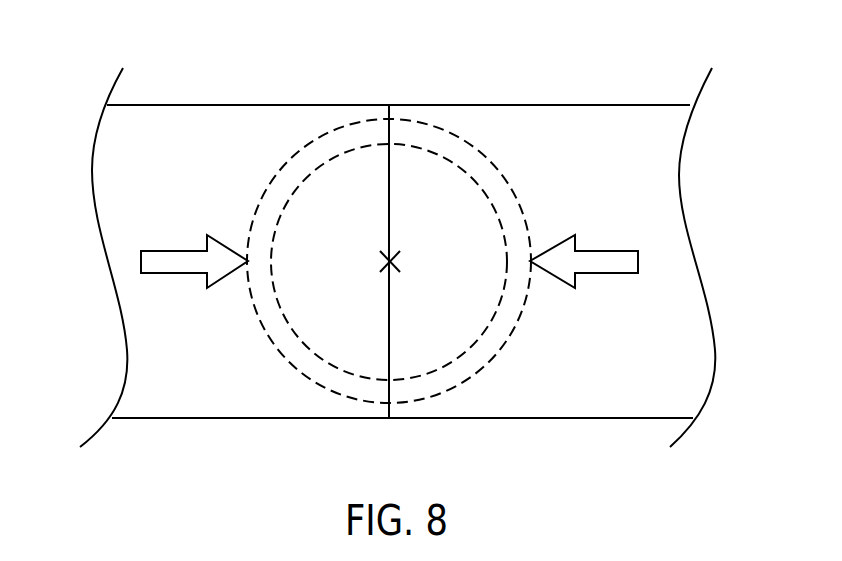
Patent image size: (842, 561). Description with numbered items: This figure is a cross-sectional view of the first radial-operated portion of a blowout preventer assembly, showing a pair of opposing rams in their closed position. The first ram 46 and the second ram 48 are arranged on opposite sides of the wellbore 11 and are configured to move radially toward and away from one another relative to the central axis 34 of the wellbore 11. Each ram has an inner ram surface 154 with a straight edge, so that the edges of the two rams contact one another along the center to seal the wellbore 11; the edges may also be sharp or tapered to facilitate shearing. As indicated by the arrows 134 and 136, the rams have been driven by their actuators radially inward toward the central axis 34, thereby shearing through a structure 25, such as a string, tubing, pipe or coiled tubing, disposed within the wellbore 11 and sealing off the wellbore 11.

The wellbore 11 is at (465, 140).
The structure 25 is at (474, 345).
The central axis 34 is at (396, 261).
The first ram 46 is at (238, 196).
The second ram 48 is at (571, 196).
The arrow 134 is at (185, 273).
The arrow 136 is at (597, 273).
The inner ram surface 154 is at (389, 111).